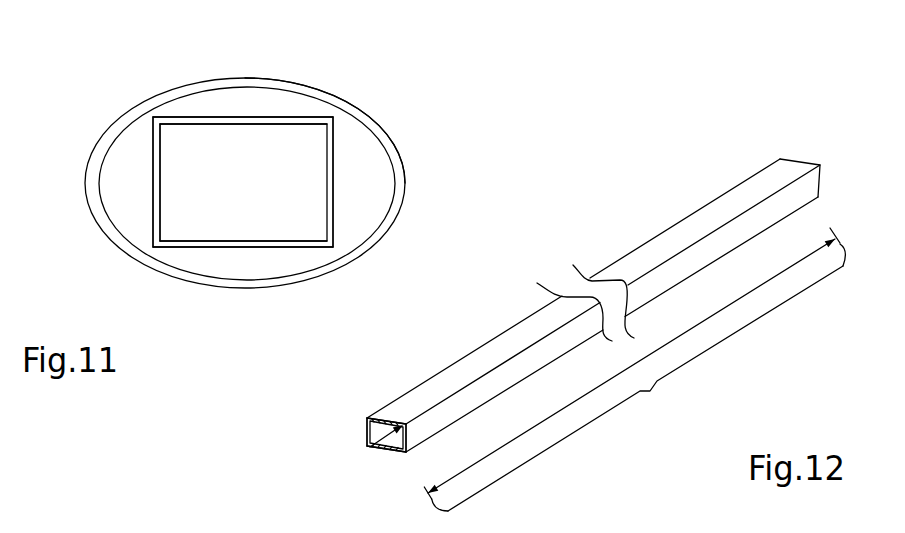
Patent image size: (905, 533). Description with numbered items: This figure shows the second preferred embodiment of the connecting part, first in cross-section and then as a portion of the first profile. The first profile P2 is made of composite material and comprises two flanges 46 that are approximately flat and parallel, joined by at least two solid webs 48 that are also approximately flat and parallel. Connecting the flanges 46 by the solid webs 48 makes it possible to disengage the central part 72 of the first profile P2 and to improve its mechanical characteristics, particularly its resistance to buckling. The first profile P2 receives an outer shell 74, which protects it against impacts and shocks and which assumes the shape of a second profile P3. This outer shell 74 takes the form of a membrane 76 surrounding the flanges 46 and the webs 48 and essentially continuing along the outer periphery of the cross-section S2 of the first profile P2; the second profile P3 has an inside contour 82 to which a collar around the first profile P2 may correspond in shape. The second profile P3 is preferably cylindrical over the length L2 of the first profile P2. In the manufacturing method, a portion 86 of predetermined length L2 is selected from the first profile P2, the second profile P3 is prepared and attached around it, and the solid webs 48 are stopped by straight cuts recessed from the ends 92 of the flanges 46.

In FIG. 11, the outer shell 74 is at (101, 122).
In FIG. 11, the membrane 76 is at (362, 247).
In FIG. 11, the central part 72 is at (302, 208).
In FIG. 12, the central part 72 is at (393, 452).
In FIG. 11, the flanges 46 is at (257, 123).
In FIG. 12, the flanges 46 is at (367, 421).
In FIG. 11, the solid webs 48 is at (330, 166).
In FIG. 12, the solid webs 48 is at (367, 437).
In FIG. 11, the inside contour 82 is at (201, 257).
In FIG. 12, the portion 86 is at (634, 369).
In FIG. 12, the ends 92 is at (769, 525).
In FIG. 11, the cross-section S2 is at (198, 121).
In FIG. 11, the first profile P2 is at (226, 109).
In FIG. 12, the first profile P2 is at (676, 212).
In FIG. 11, the second profile P3 is at (322, 82).
In FIG. 12, the length L2 is at (585, 318).